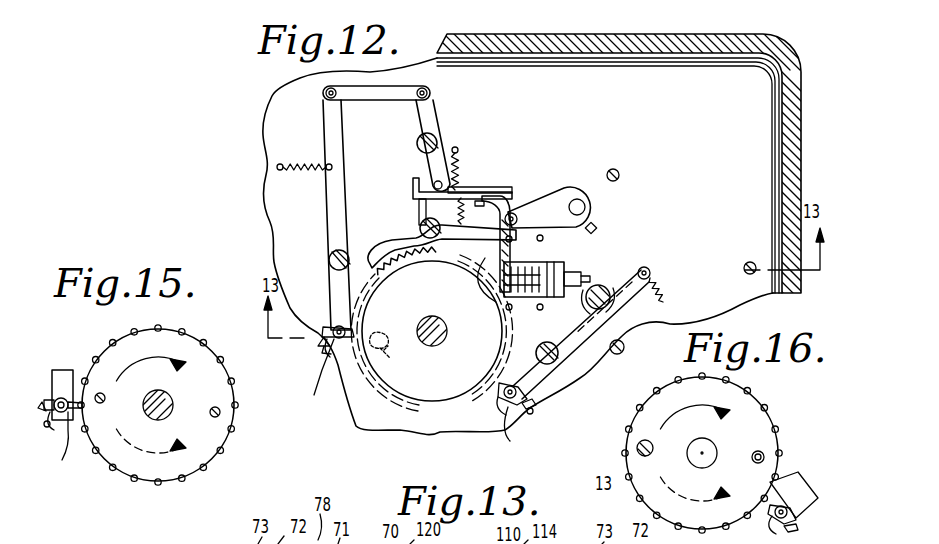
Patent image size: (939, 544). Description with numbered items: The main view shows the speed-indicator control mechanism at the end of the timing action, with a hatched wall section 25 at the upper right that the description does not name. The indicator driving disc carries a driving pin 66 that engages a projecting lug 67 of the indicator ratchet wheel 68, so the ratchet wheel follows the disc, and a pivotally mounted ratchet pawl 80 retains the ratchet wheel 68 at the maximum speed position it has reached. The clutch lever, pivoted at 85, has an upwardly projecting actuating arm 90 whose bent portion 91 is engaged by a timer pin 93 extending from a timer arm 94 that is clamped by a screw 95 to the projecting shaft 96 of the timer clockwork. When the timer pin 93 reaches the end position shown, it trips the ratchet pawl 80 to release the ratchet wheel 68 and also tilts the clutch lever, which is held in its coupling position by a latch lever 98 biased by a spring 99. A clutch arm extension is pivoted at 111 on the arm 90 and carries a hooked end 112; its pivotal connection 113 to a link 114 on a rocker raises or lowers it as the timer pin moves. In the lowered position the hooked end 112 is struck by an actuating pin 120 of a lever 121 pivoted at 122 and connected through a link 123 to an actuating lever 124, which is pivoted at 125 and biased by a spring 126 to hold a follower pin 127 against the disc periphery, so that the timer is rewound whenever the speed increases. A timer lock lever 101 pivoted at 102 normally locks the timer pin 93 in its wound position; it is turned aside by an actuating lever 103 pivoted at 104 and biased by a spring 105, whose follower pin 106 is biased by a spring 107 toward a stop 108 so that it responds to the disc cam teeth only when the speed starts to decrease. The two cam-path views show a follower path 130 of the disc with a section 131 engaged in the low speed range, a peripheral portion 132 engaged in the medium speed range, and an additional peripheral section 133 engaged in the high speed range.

In FIG. 12, the casing 25 is at (722, 95).
In FIG. 12, the projecting lug 67 is at (398, 328).
In FIG. 12, the indicator driving pin 66 is at (386, 354).
In FIG. 16, the indicator driving pin 66 is at (652, 445).
In FIG. 12, the indicator ratchet wheel 68 is at (378, 270).
In FIG. 12, the clutch lever pivot 85 is at (478, 292).
In FIG. 12, the actuating arm 90 is at (500, 292).
In FIG. 12, the link 123 is at (380, 96).
In FIG. 12, the actuating lever 124 is at (331, 212).
In FIG. 15, the actuating lever 124 is at (64, 372).
In FIG. 12, the actuating lever pivot 125 is at (329, 260).
In FIG. 12, the spring 126 is at (303, 165).
In FIG. 12, the lever 121 is at (441, 113).
In FIG. 12, the lever pivot 122 is at (437, 148).
In FIG. 12, the hooked end 112 is at (412, 186).
In FIG. 12, the pivotal connection 113 is at (460, 188).
In FIG. 12, the actuating pin 120 is at (462, 172).
In FIG. 12, the pivot 111 is at (480, 208).
In FIG. 12, the bent portion 91 is at (505, 194).
In FIG. 12, the link 114 is at (512, 196).
In FIG. 12, the timer pin 93 is at (517, 213).
In FIG. 12, the timer arm 94 is at (560, 194).
In FIG. 12, the projecting shaft 96 is at (585, 207).
In FIG. 12, the screw 95 is at (596, 232).
In FIG. 12, the ratchet pawl 80 is at (396, 240).
In FIG. 12, the latch lever 98 is at (532, 270).
In FIG. 12, the spring 99 is at (571, 272).
In FIG. 12, the timer lock lever pivot 102 is at (590, 304).
In FIG. 12, the timer lock lever 101 is at (638, 271).
In FIG. 12, the spring 105 is at (660, 290).
In FIG. 12, the actuating lever 103 is at (598, 330).
In FIG. 16, the actuating lever 103 is at (806, 470).
In FIG. 12, the actuating lever pivot 104 is at (558, 355).
In FIG. 12, the follower pin 106 is at (502, 399).
In FIG. 16, the follower pin 106 is at (782, 500).
In FIG. 12, the spring 107 is at (332, 326).
In FIG. 15, the spring 107 is at (48, 420).
In FIG. 16, the spring 107 is at (798, 530).
In FIG. 12, the stop 108 is at (333, 356).
In FIG. 15, the stop 108 is at (55, 430).
In FIG. 16, the stop 108 is at (772, 528).
In FIG. 12, the follower pin 127 is at (326, 377).
In FIG. 15, the follower pin 127 is at (80, 455).
In FIG. 15, the peripheral section 131 is at (190, 473).
In FIG. 16, the peripheral section 131 is at (630, 477).
In FIG. 15, the additional peripheral section 133 is at (180, 326).
In FIG. 16, the additional peripheral section 133 is at (766, 408).
In FIG. 15, the peripheral portion 132 is at (100, 463).
In FIG. 16, the peripheral portion 132 is at (664, 520).
In FIG. 15, the cam path 130 is at (231, 373).
In FIG. 16, the cam path 130 is at (652, 397).